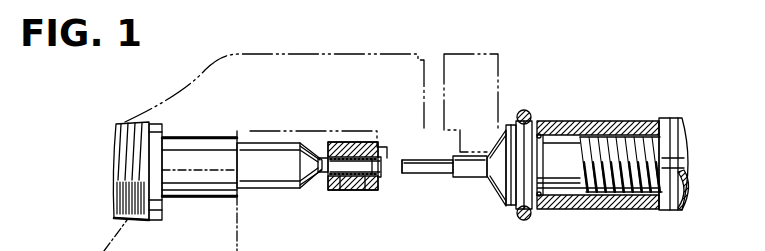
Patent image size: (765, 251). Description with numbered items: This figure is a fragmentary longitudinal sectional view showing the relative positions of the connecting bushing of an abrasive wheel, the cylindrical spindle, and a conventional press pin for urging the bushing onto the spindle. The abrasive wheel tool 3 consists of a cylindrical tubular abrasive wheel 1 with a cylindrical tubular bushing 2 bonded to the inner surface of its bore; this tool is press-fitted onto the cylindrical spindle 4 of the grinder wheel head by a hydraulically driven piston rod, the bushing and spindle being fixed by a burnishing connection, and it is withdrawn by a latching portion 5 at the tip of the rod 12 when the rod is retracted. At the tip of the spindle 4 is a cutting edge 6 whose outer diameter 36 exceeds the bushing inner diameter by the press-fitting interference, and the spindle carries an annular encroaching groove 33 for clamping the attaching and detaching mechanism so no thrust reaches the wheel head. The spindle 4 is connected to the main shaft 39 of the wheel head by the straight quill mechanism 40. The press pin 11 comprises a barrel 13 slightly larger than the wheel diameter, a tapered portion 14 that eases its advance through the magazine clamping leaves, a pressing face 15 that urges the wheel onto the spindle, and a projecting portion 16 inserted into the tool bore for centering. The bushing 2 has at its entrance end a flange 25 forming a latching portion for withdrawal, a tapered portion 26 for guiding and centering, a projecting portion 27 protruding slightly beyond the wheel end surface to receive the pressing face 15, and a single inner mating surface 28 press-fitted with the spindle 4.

The abrasive wheel 1 is at (345, 142).
The bushing 2 is at (355, 190).
The abrasive wheel tool 3 is at (370, 182).
The spindle 4 is at (502, 197).
The latching portion 5 is at (384, 120).
The cutting edge 6 is at (400, 160).
The press pin 11 is at (252, 142).
The rod 12 is at (198, 76).
The barrel 13 is at (268, 190).
The tapered portion 14 is at (322, 146).
The pressing face 15 is at (328, 156).
The projecting portion 16 is at (320, 178).
The flange 25 is at (384, 170).
The tapered portion 26 is at (380, 186).
The projecting portion 27 is at (340, 182).
The mating surface 28 is at (366, 142).
The encroaching groove 33 is at (524, 110).
The outer diameter 36 is at (470, 178).
The main shaft 39 is at (622, 120).
The straight quill mechanism 40 is at (576, 145).